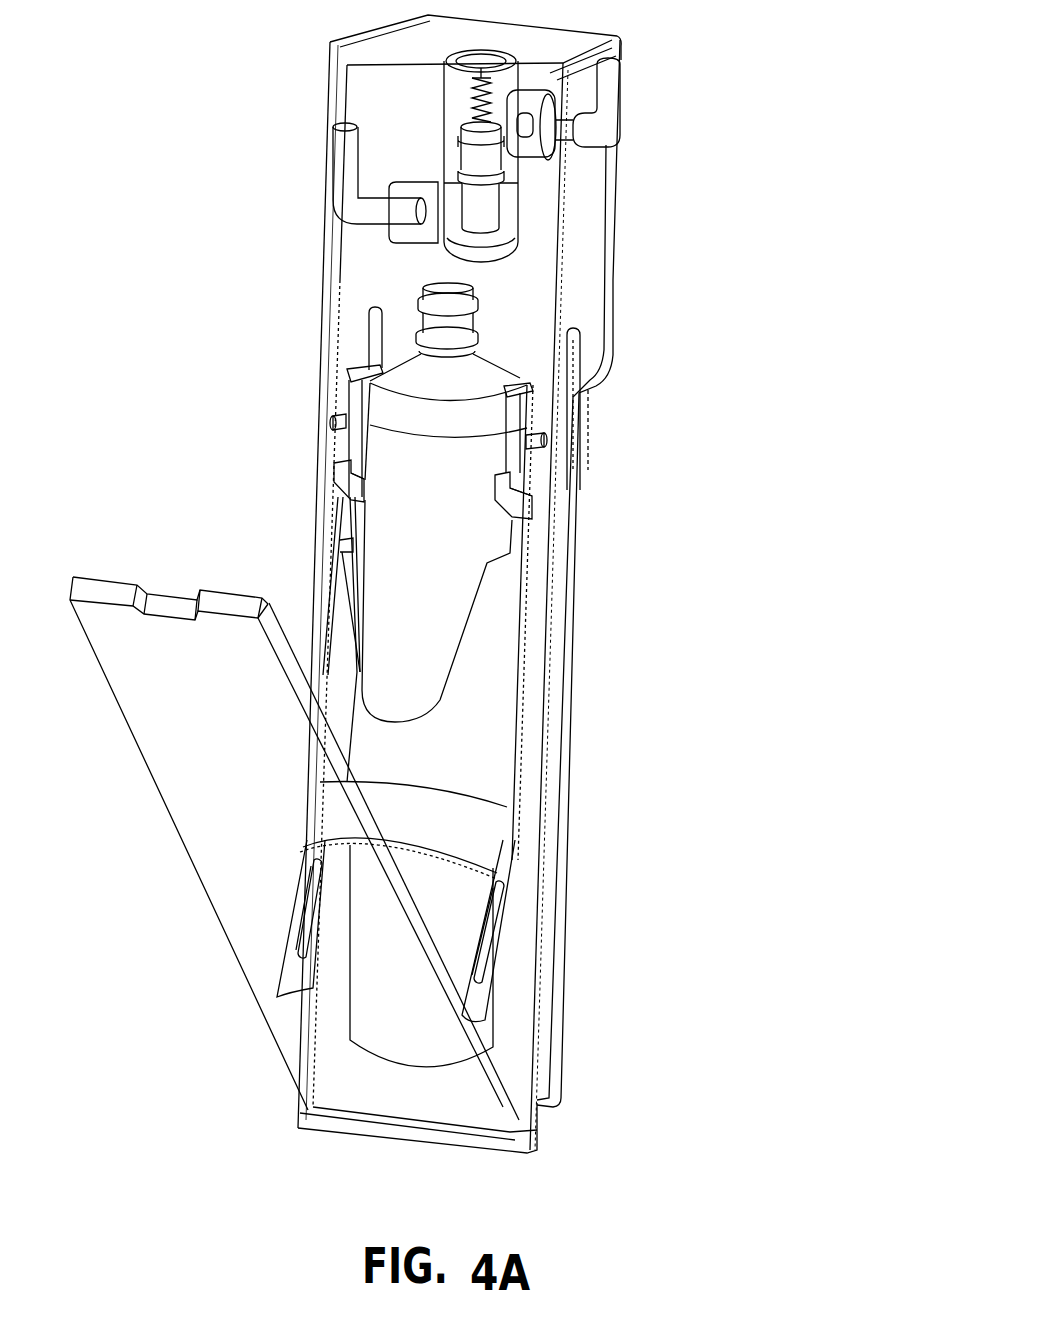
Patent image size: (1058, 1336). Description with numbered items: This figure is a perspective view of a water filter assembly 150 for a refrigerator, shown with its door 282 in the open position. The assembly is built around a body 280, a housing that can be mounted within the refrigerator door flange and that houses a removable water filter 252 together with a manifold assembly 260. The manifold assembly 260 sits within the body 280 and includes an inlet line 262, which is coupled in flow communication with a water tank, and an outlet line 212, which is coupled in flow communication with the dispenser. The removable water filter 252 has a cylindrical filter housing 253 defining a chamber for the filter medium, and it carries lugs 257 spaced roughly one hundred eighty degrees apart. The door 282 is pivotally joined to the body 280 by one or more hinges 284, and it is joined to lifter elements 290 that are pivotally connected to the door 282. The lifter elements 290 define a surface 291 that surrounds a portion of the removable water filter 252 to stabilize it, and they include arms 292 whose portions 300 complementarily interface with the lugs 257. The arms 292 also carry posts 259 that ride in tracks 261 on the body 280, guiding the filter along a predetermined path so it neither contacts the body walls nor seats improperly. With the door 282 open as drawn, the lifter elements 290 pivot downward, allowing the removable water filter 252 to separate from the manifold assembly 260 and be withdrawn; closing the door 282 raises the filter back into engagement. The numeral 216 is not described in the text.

The water filter assembly 150 is at (695, 404).
The outlet line 212 is at (337, 143).
The guide post 216 is at (367, 323).
The removable water filter 252 is at (467, 528).
The cylindrical filter housing 253 is at (443, 893).
The lugs 257 is at (370, 368).
The posts 259 is at (340, 412).
The manifold assembly 260 is at (553, 110).
The tracks 261 is at (583, 365).
The inlet line 262 is at (613, 75).
The body 280 is at (587, 213).
The door 282 is at (193, 790).
The hinges 284 is at (320, 1080).
The lifter elements 290 is at (297, 898).
The surface 291 is at (470, 730).
The arms 292 is at (340, 470).
The portions 300 is at (336, 420).